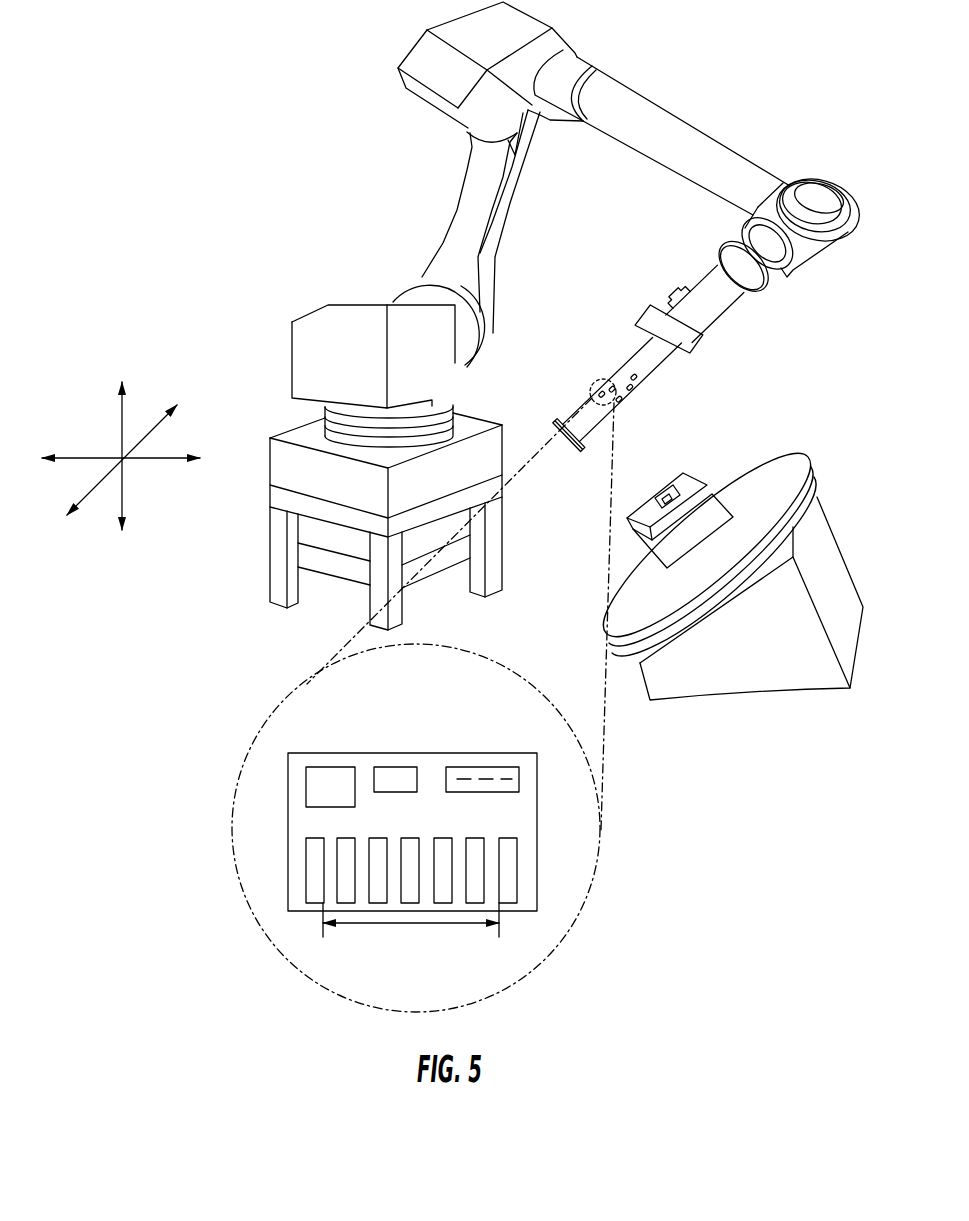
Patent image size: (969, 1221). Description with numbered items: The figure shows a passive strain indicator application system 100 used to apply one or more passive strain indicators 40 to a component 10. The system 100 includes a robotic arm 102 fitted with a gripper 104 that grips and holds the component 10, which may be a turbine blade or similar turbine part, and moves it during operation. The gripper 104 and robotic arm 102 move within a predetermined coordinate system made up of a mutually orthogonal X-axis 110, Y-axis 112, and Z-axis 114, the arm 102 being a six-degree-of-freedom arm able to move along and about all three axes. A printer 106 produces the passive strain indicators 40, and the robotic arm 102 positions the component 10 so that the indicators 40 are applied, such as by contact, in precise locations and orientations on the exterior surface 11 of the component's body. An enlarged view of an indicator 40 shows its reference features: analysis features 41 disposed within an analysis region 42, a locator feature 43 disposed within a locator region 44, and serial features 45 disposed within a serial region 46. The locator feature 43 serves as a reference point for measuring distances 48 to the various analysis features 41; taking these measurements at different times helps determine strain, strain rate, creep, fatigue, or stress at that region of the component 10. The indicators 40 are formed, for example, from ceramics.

The passive strain indicator application system 100 is at (568, 316).
The robotic arm 102 is at (427, 213).
The gripper 104 is at (732, 318).
The printer 106 is at (732, 460).
The component 10 is at (627, 340).
The exterior surface 11 is at (302, 712).
The passive strain indicator 40 is at (660, 492).
The analysis feature 41 is at (408, 903).
The analysis region 42 is at (500, 817).
The locator feature 43 is at (323, 787).
The locator region 44 is at (362, 752).
The serial feature 45 is at (400, 775).
The serial region 46 is at (460, 760).
The distance 48 is at (418, 925).
The X-axis 110 is at (133, 460).
The Y-axis 112 is at (145, 438).
The Z-axis 114 is at (119, 427).